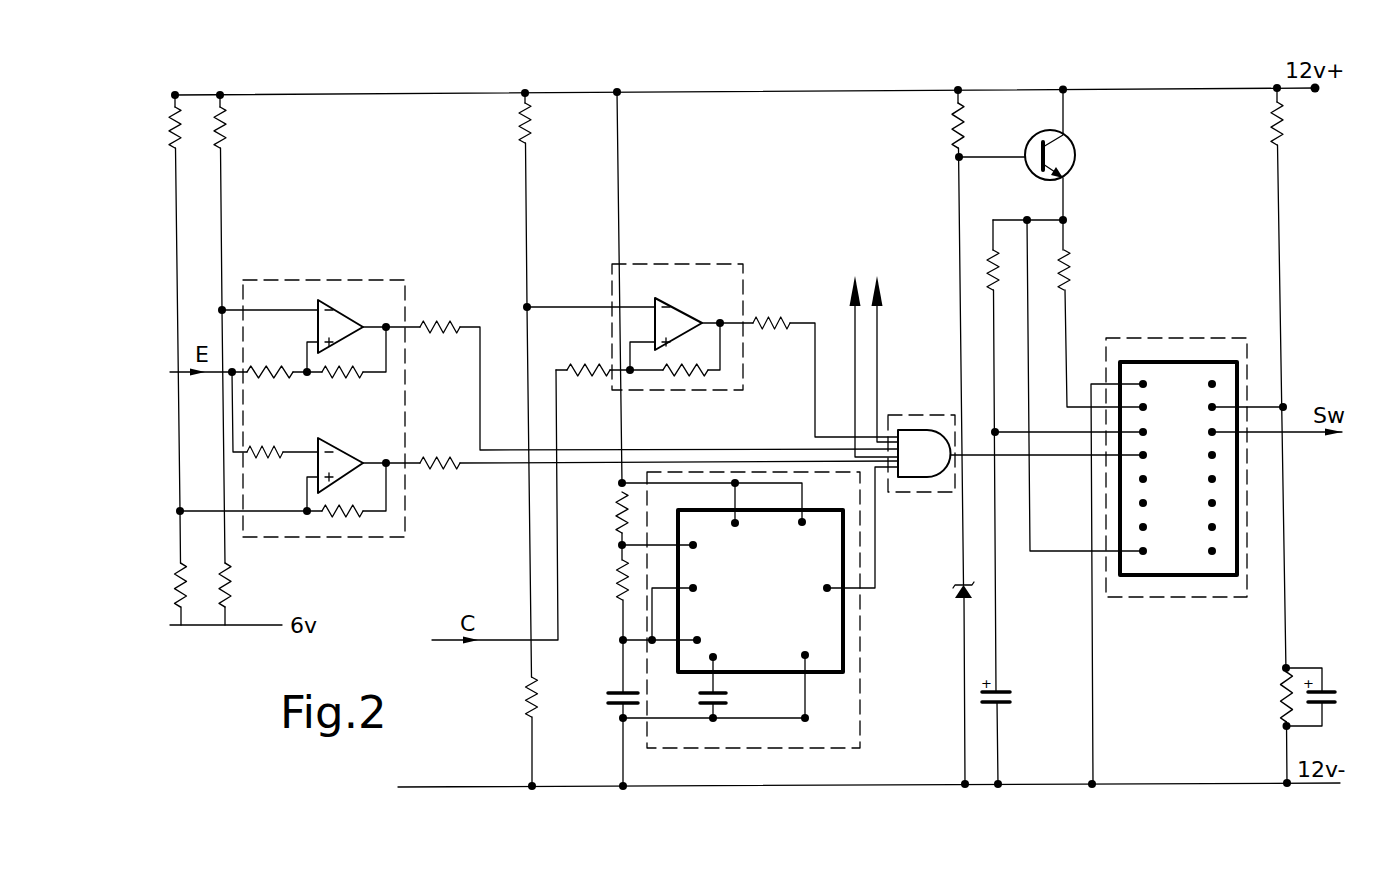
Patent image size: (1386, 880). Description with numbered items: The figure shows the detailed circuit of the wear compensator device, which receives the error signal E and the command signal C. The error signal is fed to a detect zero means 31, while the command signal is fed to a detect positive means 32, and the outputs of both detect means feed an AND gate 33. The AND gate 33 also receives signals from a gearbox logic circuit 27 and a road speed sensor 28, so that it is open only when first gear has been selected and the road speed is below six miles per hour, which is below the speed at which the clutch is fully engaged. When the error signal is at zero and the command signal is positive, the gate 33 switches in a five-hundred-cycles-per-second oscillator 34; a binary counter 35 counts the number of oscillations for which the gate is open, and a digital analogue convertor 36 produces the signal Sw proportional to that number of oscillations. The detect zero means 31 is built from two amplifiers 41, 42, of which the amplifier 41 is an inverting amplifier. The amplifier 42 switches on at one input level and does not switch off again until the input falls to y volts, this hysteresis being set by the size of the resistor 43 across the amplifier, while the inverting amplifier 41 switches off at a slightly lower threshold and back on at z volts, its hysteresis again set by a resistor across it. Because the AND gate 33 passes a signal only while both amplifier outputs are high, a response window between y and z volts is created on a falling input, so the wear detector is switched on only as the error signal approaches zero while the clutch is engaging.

The gearbox logic circuit 27 is at (890, 350).
The road speed sensor 28 is at (858, 358).
The detect zero means 31 is at (323, 279).
The detect positive means 32 is at (697, 263).
The AND gate 33 is at (930, 493).
The oscillator 34 is at (862, 667).
The binary counter 35 is at (1157, 361).
The digital analogue convertor 36 is at (1178, 468).
The inverting amplifier 41 is at (360, 468).
The amplifier 42 is at (347, 308).
The resistor 43 is at (343, 377).